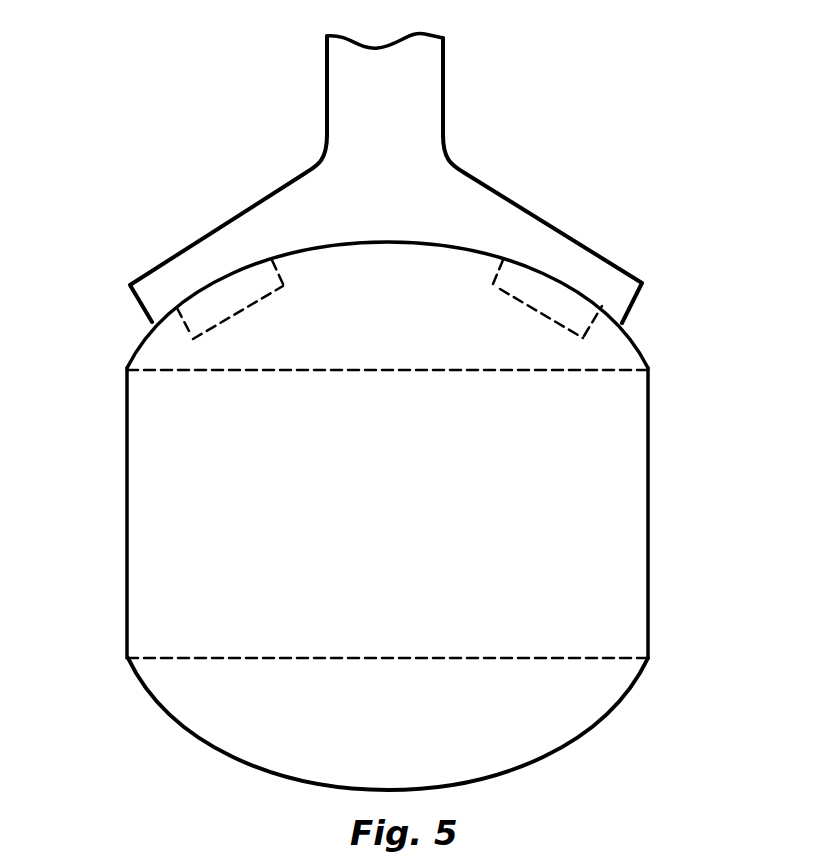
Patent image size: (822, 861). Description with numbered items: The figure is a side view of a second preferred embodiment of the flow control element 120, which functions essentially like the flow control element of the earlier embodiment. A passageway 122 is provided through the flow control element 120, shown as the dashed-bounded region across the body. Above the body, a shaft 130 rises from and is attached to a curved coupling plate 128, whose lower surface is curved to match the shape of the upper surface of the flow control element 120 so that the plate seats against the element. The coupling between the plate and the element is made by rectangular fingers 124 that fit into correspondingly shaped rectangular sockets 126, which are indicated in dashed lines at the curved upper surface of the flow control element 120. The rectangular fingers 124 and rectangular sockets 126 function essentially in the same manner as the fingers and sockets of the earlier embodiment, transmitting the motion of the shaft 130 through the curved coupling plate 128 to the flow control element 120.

The flow control element 120 is at (640, 345).
The passageway 122 is at (577, 653).
The rectangular fingers 124 is at (158, 346).
The rectangular sockets 126 is at (281, 282).
The curved coupling plate 128 is at (532, 236).
The shaft 130 is at (443, 118).